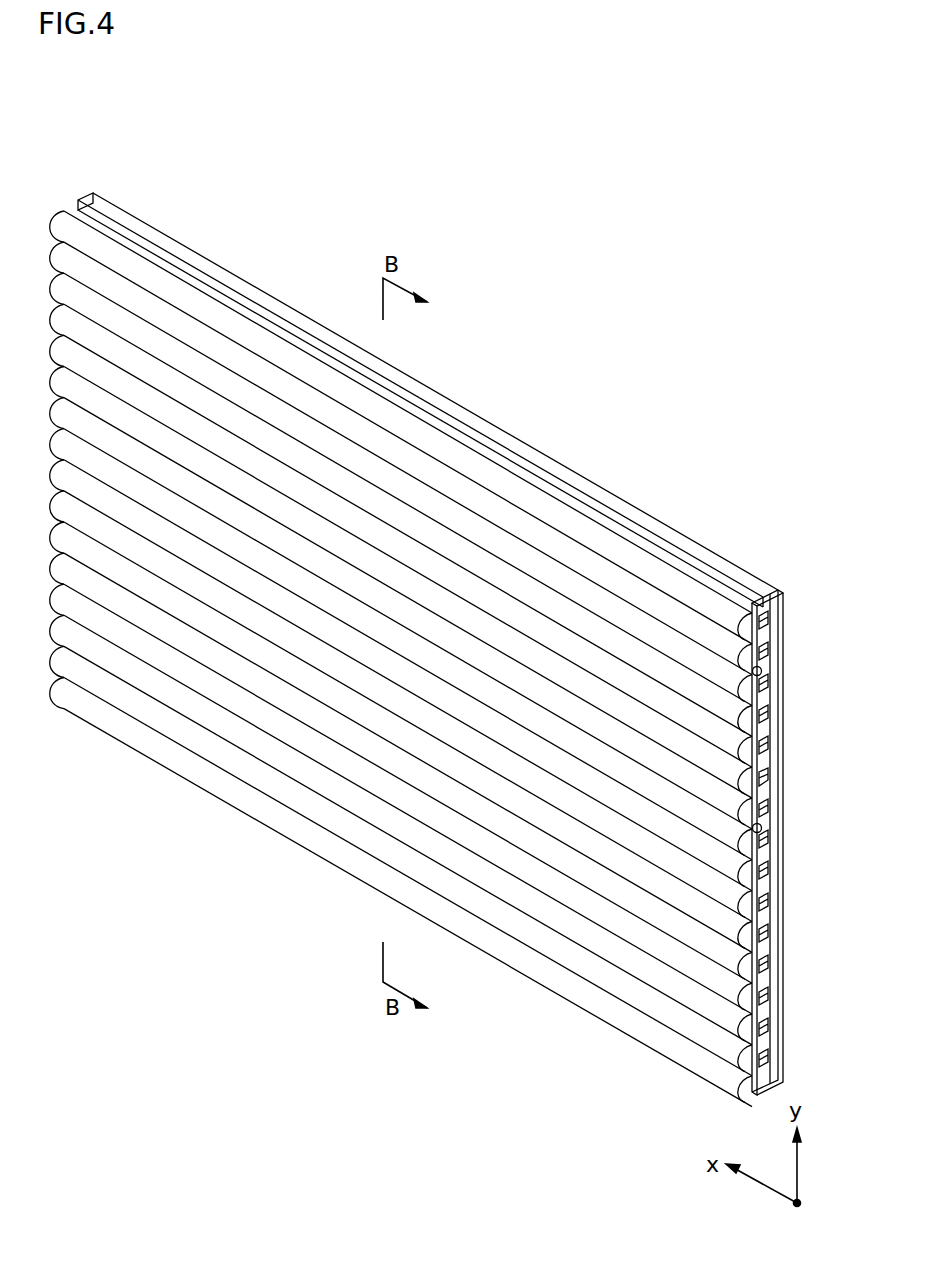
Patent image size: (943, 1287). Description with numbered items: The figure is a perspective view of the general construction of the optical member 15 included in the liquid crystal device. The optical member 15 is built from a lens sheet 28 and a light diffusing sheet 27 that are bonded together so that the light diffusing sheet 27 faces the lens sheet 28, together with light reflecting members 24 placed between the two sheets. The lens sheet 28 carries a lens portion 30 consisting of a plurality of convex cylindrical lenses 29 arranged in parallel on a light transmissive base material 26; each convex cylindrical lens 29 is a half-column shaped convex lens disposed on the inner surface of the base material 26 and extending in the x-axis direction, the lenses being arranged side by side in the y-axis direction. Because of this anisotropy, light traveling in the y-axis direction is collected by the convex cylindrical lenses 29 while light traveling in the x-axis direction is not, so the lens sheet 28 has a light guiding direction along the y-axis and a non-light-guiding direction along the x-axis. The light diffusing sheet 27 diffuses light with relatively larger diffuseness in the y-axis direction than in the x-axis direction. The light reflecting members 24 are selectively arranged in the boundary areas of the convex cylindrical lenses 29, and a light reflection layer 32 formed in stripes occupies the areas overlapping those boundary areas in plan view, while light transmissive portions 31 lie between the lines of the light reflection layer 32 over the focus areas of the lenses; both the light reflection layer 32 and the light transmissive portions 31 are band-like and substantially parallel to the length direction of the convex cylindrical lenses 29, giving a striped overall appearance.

The optical member 15 is at (117, 122).
The light diffusing sheet 27 is at (103, 205).
The lens sheet 28 is at (58, 210).
The convex cylindrical lens 29 is at (133, 646).
The lens portion 30 is at (172, 830).
The light transmissive base material 26 is at (760, 616).
The light reflection layer 32 is at (765, 663).
The light reflecting member 24 is at (763, 676).
The light transmissive portion 31 is at (765, 736).